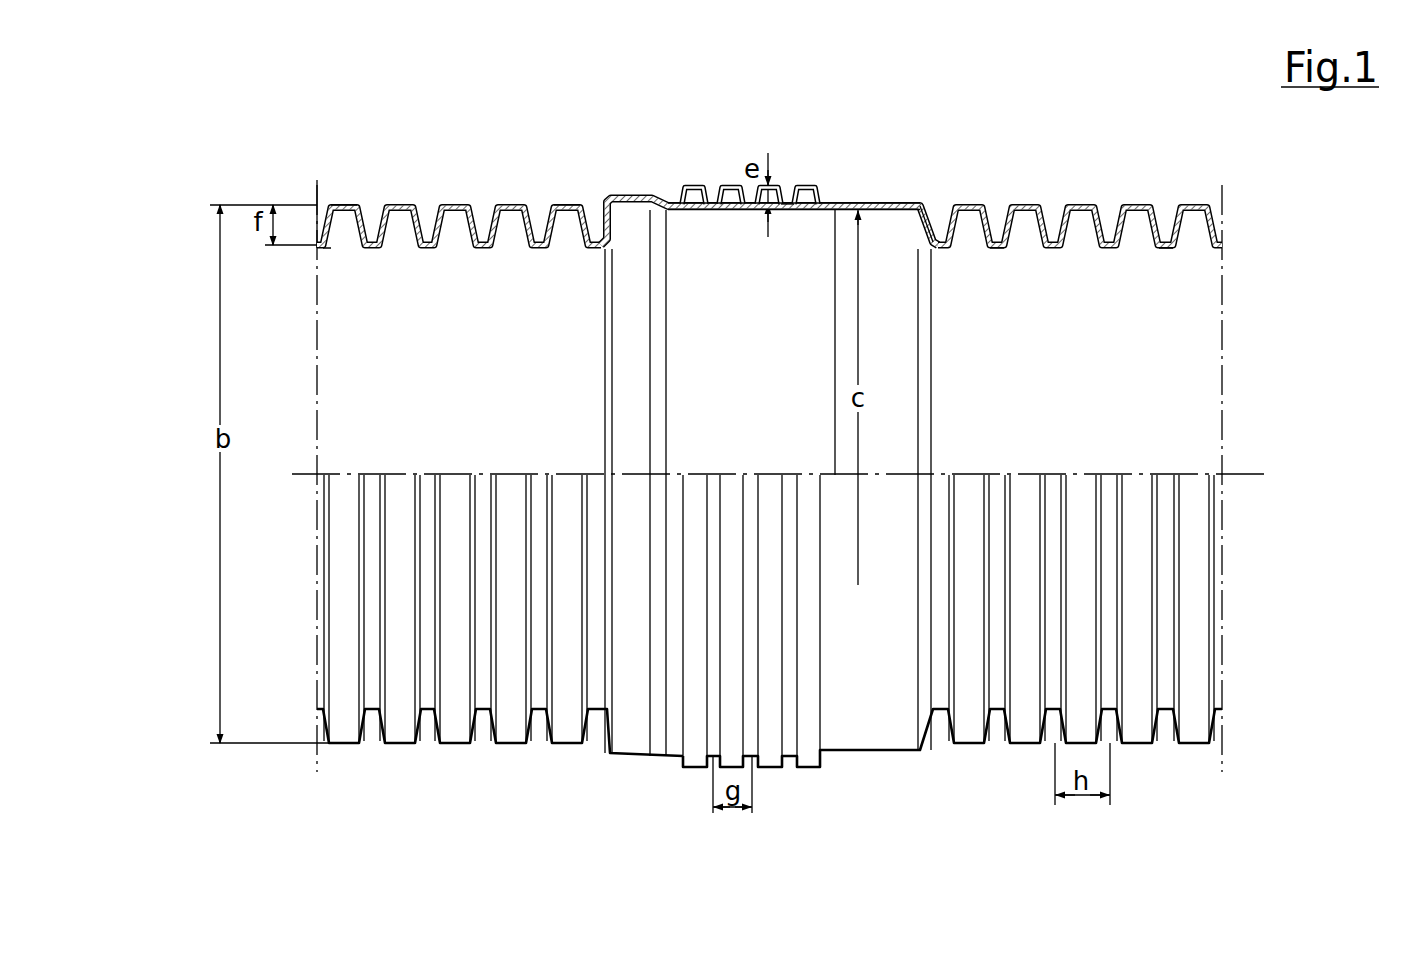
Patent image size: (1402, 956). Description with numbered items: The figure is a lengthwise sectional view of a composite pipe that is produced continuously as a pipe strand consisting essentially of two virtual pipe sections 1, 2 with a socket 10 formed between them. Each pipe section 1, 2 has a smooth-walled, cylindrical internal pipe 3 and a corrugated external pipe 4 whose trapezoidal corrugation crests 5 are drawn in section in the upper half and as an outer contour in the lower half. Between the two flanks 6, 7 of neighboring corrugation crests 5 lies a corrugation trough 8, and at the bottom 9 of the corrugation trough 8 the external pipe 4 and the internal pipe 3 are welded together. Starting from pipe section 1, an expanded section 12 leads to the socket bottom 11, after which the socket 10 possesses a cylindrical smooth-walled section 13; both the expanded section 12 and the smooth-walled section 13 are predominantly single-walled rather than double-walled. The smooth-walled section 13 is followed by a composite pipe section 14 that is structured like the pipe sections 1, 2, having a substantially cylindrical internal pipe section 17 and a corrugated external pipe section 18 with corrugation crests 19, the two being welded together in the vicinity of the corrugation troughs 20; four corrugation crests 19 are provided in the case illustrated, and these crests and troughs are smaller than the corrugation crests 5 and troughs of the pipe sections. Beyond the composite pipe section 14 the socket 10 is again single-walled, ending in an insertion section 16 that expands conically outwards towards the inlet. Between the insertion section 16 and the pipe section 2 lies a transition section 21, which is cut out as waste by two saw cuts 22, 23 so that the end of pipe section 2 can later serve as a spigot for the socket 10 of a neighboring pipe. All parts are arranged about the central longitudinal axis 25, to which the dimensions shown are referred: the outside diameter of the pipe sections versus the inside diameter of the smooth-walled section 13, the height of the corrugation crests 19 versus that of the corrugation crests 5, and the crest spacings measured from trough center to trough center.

The pipe section 1 is at (1010, 197).
The pipe section 2 is at (388, 203).
The internal pipe 3 is at (337, 247).
The external pipe 4 is at (344, 203).
The corrugation crest 5 is at (457, 745).
The flank 6 is at (988, 728).
The flank 7 is at (1007, 740).
The corrugation trough 8 is at (1167, 728).
The bottom 9 is at (1109, 238).
The socket 10 is at (786, 180).
The socket bottom 11 is at (920, 232).
The expanded section 12 is at (918, 226).
The smooth-walled section 13 is at (873, 201).
The composite pipe section 14 is at (705, 180).
The insertion section 16 is at (662, 756).
The internal pipe section 17 is at (727, 208).
The external pipe section 18 is at (695, 770).
The corrugation crest 19 is at (808, 770).
The corrugation trough 20 is at (788, 758).
The transition section 21 is at (562, 197).
The saw cut 22 is at (656, 172).
The saw cut 23 is at (482, 172).
The central longitudinal axis 25 is at (485, 473).